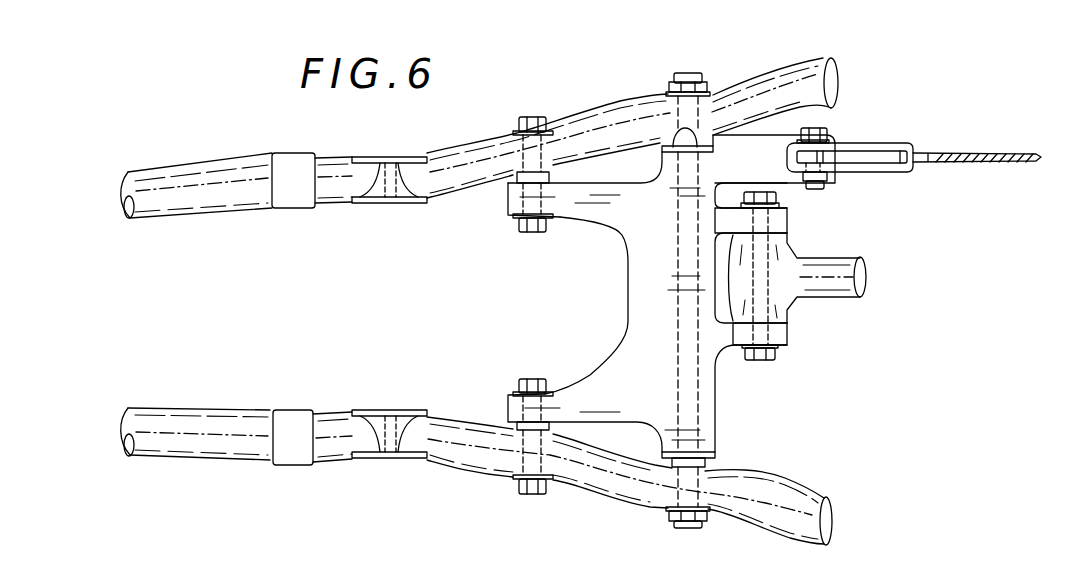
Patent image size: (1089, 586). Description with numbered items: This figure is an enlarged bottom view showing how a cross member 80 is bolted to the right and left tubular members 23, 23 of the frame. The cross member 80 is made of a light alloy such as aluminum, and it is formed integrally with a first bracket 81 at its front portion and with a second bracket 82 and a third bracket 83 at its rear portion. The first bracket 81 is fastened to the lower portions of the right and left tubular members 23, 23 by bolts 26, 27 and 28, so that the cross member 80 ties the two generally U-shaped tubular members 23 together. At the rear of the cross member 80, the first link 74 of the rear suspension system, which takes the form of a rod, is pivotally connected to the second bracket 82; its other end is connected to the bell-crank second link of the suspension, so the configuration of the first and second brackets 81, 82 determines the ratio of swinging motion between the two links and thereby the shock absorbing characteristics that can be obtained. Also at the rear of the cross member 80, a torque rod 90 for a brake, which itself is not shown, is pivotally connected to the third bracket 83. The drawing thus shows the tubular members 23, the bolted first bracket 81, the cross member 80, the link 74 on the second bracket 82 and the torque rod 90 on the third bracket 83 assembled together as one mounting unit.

The right and left tubular members 23 is at (462, 180).
The bolt 26 is at (527, 122).
The bolt 27 is at (530, 492).
The bolt 28 is at (690, 525).
The first link 74 is at (833, 260).
The cross member 80 is at (671, 296).
The first bracket 81 is at (587, 382).
The second bracket 82 is at (788, 343).
The third bracket 83 is at (778, 150).
The torque rod 90 is at (877, 143).